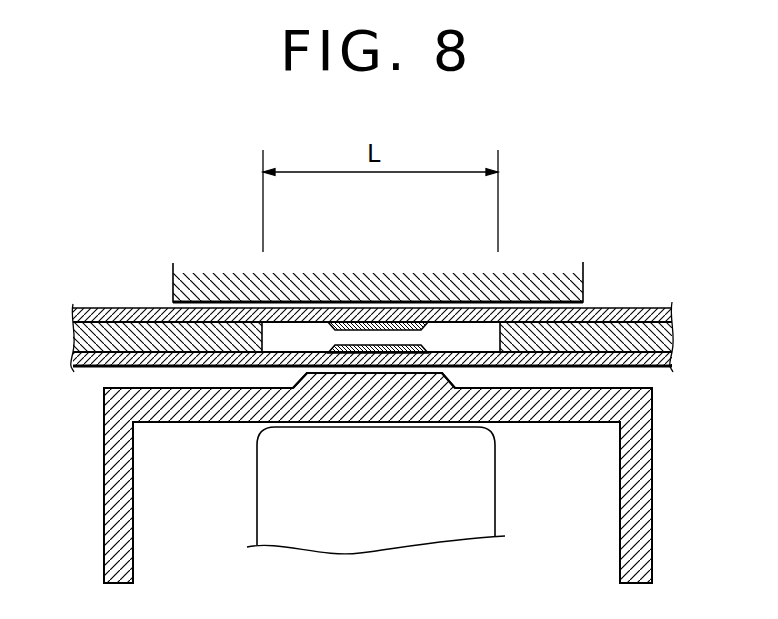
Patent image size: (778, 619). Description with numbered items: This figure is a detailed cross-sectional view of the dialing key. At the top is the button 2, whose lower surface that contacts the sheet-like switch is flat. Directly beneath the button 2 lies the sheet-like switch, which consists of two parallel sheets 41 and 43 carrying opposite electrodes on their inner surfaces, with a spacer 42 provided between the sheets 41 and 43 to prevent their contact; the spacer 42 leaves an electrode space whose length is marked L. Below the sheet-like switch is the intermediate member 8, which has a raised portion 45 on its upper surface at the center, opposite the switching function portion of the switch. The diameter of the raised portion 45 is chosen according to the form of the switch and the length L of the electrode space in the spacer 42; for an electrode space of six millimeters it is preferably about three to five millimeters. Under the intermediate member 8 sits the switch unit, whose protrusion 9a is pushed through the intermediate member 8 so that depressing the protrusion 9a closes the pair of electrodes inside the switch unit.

The button 2 is at (566, 291).
The sheet 41 is at (650, 313).
The spacer 42 is at (657, 338).
The sheet 43 is at (648, 357).
The raised portion 45 is at (298, 385).
The intermediate member 8 is at (637, 431).
The protrusion 9a is at (480, 487).